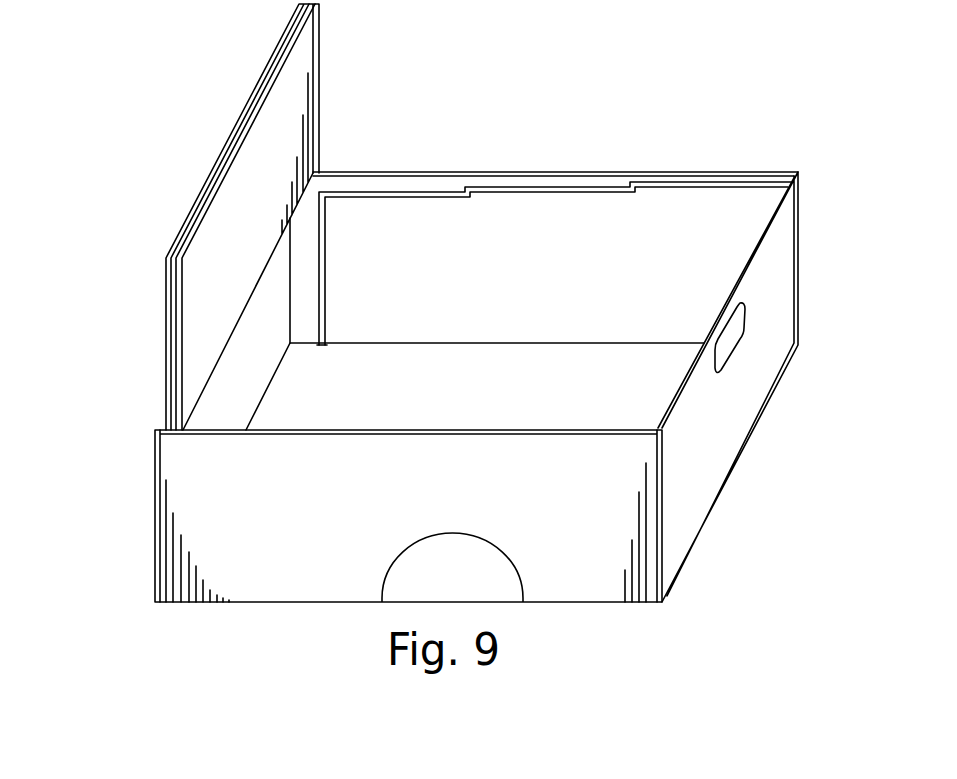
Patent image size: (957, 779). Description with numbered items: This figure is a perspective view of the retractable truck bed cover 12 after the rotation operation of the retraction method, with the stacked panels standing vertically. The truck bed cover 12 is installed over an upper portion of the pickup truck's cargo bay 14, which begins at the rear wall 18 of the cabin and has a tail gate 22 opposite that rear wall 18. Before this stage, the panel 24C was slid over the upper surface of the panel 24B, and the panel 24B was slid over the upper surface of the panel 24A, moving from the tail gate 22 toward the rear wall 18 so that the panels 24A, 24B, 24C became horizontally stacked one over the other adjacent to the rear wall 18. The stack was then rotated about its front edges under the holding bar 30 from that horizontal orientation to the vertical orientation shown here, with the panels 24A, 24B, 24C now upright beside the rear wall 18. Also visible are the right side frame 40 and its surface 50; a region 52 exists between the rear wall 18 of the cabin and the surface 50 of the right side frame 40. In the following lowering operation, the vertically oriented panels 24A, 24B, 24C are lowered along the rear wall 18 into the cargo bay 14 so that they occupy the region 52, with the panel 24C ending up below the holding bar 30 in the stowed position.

The retractable truck bed cover 12 is at (381, 126).
The cargo bay 14 is at (547, 230).
The rear wall 18 is at (154, 428).
The tail gate 22 is at (765, 291).
The panel 24A is at (183, 373).
The panel 24B is at (173, 330).
The panel 24C is at (165, 296).
The holding bar 30 is at (164, 414).
The right side frame 40 is at (660, 289).
The surface 50 is at (327, 258).
The region 52 is at (293, 325).